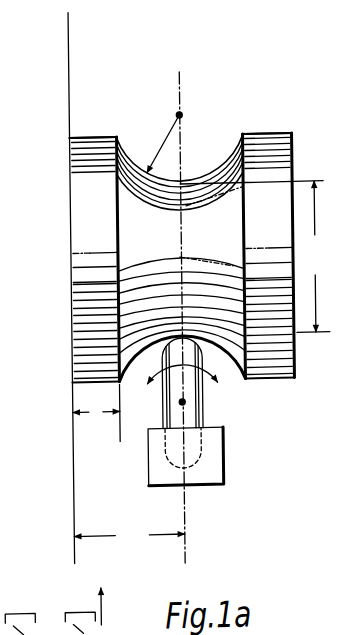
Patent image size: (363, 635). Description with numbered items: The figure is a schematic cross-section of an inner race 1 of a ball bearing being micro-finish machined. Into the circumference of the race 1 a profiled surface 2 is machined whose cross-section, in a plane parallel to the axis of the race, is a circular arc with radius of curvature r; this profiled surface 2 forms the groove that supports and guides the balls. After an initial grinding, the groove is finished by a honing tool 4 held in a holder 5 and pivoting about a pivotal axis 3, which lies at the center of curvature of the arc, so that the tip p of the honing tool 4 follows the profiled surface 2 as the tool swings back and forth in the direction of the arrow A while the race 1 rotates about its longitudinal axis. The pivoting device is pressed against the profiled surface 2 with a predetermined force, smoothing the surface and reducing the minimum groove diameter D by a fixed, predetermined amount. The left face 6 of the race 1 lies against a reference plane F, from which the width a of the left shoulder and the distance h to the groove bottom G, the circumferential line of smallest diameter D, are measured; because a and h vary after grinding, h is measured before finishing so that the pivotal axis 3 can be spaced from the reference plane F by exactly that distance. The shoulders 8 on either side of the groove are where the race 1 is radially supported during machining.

The inner race 1 is at (170, 224).
The profiled surface 2 is at (234, 158).
The pivotal axis 3 is at (184, 401).
The honing tool 4 is at (203, 428).
The holder 5 is at (208, 467).
The left face 6 is at (70, 193).
The shoulders 8 is at (92, 134).
The reference plane F is at (70, 43).
The radius of curvature r is at (162, 150).
The groove bottom G is at (184, 177).
The tip of the honing tool p is at (118, 308).
The arrow A is at (74, 372).
The groove diameter D is at (255, 258).
The width of the left shoulder a is at (97, 413).
The distance of the groove bottom from the reference plane h is at (129, 536).